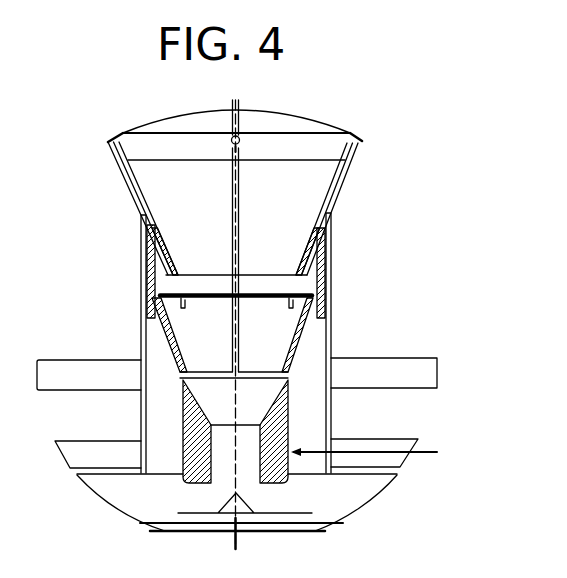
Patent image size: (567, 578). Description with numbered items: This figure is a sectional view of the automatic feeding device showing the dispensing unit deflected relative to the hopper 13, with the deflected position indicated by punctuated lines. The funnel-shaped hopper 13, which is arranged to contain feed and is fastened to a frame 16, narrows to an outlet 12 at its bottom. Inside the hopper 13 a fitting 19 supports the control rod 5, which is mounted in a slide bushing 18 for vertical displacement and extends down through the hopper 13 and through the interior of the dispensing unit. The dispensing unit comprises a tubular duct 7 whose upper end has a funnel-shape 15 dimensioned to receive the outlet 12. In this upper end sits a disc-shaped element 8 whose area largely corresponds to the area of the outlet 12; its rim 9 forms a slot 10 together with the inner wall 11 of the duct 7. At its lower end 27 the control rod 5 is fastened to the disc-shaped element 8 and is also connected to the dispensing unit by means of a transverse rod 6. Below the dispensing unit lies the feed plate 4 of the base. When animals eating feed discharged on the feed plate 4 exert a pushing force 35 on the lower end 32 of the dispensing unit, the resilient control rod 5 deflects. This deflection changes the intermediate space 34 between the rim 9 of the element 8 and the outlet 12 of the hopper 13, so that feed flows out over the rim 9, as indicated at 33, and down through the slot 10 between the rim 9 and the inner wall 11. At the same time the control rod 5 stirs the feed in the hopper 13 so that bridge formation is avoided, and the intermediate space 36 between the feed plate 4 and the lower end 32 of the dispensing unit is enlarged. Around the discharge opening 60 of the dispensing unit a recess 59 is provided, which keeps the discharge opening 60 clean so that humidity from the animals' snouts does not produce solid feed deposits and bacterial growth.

The feed plate 4 is at (343, 522).
The control rod 5 is at (242, 124).
The transverse rod 6 is at (256, 378).
The tubular duct 7 is at (296, 347).
The disc-shaped element 8 is at (253, 292).
The rim 9 is at (165, 297).
The slot 10 is at (160, 293).
The inner wall 11 is at (167, 340).
The outlet 12 is at (298, 275).
The hopper 13 is at (348, 172).
The funnel-shape 15 is at (330, 323).
The frame 16 is at (332, 217).
The slide bushing 18 is at (227, 125).
The fitting 19 is at (310, 142).
The lower end 27 is at (220, 368).
The lower end 32 is at (173, 473).
The feed flow 33 is at (285, 336).
The intermediate space 34 is at (307, 291).
The pushing force 35 is at (362, 450).
The intermediate space 36 is at (263, 505).
The recess 59 is at (207, 490).
The discharge opening 60 is at (228, 486).